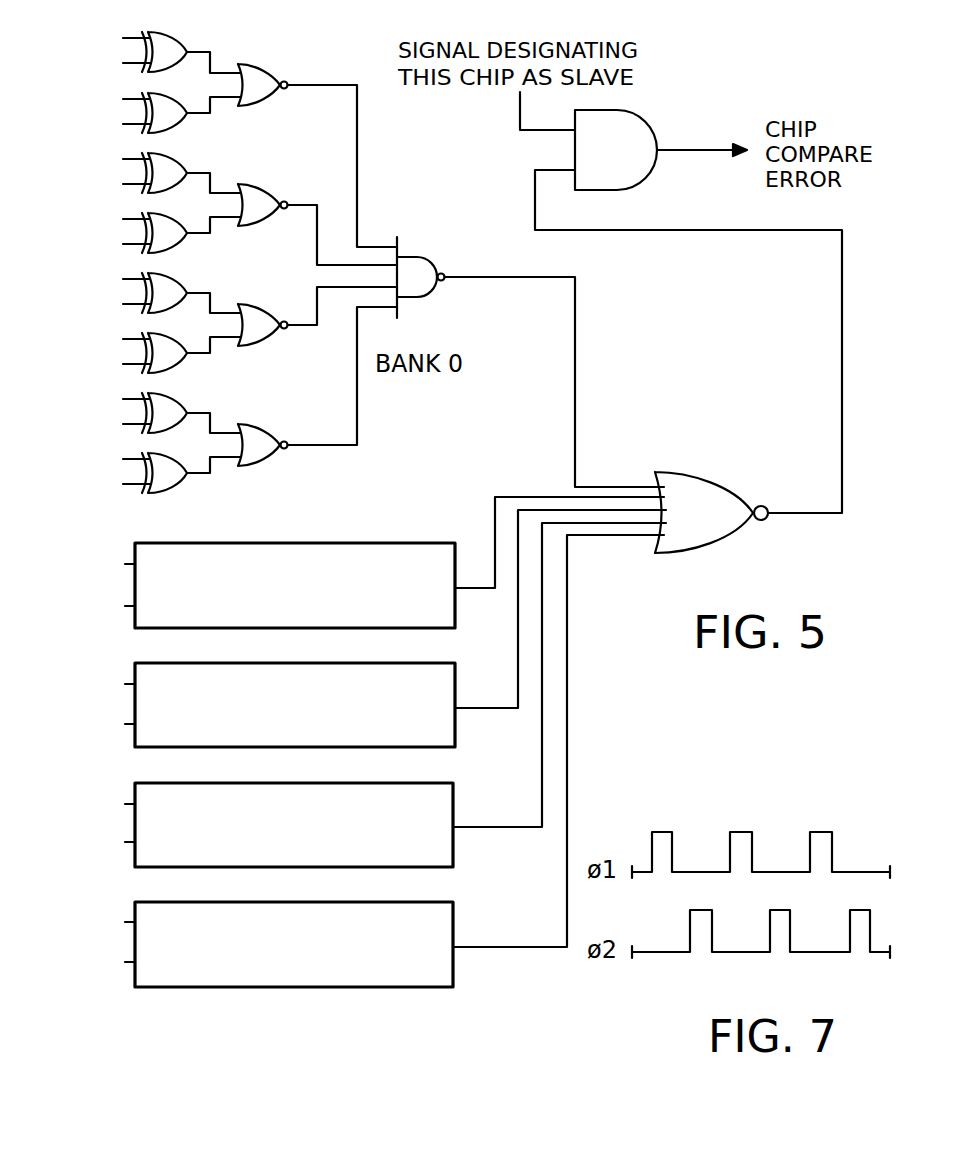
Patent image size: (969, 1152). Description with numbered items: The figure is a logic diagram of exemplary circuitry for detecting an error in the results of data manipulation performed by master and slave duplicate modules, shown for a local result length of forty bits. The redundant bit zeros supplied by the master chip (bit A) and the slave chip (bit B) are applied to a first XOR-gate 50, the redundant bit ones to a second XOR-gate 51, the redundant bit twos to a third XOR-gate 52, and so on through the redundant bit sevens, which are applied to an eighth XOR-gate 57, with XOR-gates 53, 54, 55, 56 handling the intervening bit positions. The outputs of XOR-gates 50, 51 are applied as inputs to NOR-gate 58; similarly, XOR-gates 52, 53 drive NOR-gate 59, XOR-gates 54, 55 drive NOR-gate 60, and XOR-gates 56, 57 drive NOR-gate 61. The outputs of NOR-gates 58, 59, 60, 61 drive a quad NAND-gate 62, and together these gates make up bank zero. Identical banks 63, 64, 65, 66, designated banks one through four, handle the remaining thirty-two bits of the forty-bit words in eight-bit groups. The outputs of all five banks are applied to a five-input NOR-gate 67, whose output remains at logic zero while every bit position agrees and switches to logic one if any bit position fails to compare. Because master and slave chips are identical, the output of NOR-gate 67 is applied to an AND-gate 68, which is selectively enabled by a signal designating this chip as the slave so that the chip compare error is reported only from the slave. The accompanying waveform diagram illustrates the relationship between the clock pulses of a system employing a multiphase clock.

The first XOR-gate 50 is at (174, 33).
The second XOR-gate 51 is at (172, 129).
The third XOR-gate 52 is at (178, 160).
The XOR-gate 53 is at (172, 249).
The XOR-gate 54 is at (180, 282).
The XOR-gate 55 is at (170, 368).
The XOR-gate 56 is at (178, 406).
The eighth XOR-gate 57 is at (166, 490).
The NOR-gate 58 is at (264, 64).
The NOR-gate 59 is at (265, 185).
The NOR-gate 60 is at (255, 305).
The NOR-gate 61 is at (262, 462).
The quad NAND-gate 62 is at (418, 256).
The bank 1 63 is at (350, 544).
The bank 2 64 is at (457, 685).
The bank 3 65 is at (455, 806).
The bank 4 66 is at (455, 928).
The five-input NOR-gate 67 is at (683, 472).
The AND-gate 68 is at (633, 111).